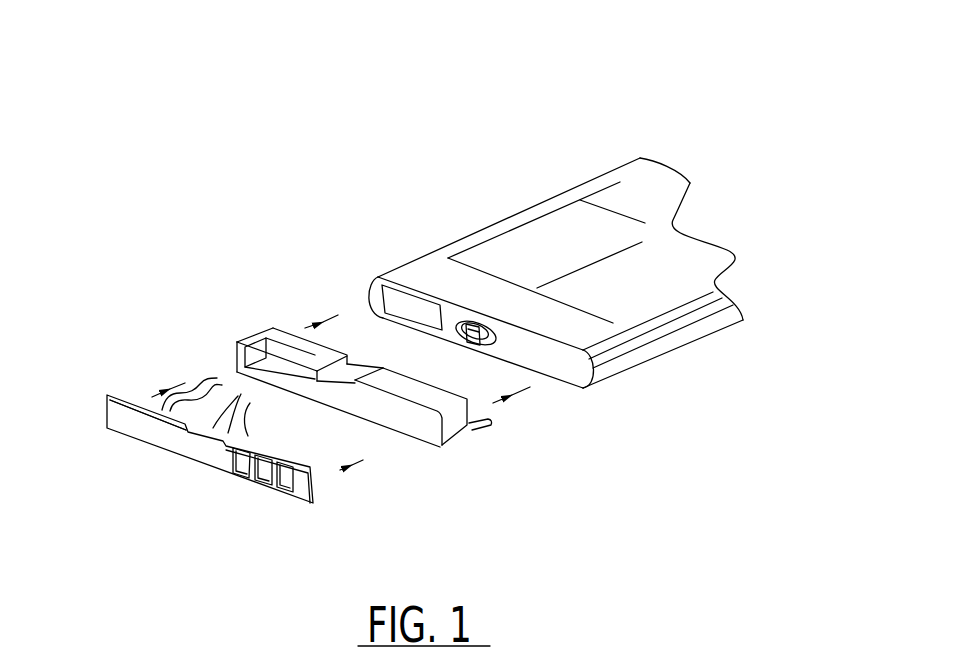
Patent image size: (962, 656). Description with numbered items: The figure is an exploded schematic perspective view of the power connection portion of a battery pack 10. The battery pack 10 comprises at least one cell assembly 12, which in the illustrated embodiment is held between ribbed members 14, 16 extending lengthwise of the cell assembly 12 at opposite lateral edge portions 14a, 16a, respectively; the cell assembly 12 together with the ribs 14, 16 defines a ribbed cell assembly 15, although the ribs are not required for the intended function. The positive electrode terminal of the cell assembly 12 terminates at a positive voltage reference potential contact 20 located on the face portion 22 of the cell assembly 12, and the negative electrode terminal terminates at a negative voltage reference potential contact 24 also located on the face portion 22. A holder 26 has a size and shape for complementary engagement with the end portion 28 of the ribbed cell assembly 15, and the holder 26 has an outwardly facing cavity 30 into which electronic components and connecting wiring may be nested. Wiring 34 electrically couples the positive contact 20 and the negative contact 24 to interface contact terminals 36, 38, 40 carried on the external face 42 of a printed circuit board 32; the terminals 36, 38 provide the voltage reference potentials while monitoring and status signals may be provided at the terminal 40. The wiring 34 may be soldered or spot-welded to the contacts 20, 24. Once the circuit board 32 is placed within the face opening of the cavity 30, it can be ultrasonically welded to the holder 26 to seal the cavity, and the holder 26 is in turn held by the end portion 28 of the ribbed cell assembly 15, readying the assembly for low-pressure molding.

The battery pack 10 is at (762, 147).
The cell assembly 12 is at (565, 246).
The ribbed member 14 is at (598, 175).
The lateral edge portion 14a is at (657, 147).
The ribbed cell assembly 15 is at (480, 195).
The ribbed member 16 is at (720, 287).
The lateral edge portion 16a is at (750, 297).
The positive voltage reference potential contact 20 is at (478, 348).
The face portion 22 is at (560, 369).
The negative voltage reference potential contact 24 is at (408, 312).
The holder 26 is at (262, 327).
The end portion 28 is at (376, 262).
The cavity 30 is at (415, 432).
The printed circuit board 32 is at (104, 395).
The wiring 34 is at (265, 415).
The interface contact terminal 36 is at (242, 480).
The interface contact terminal 38 is at (265, 487).
The interface contact terminal 40 is at (287, 498).
The external face 42 is at (148, 438).